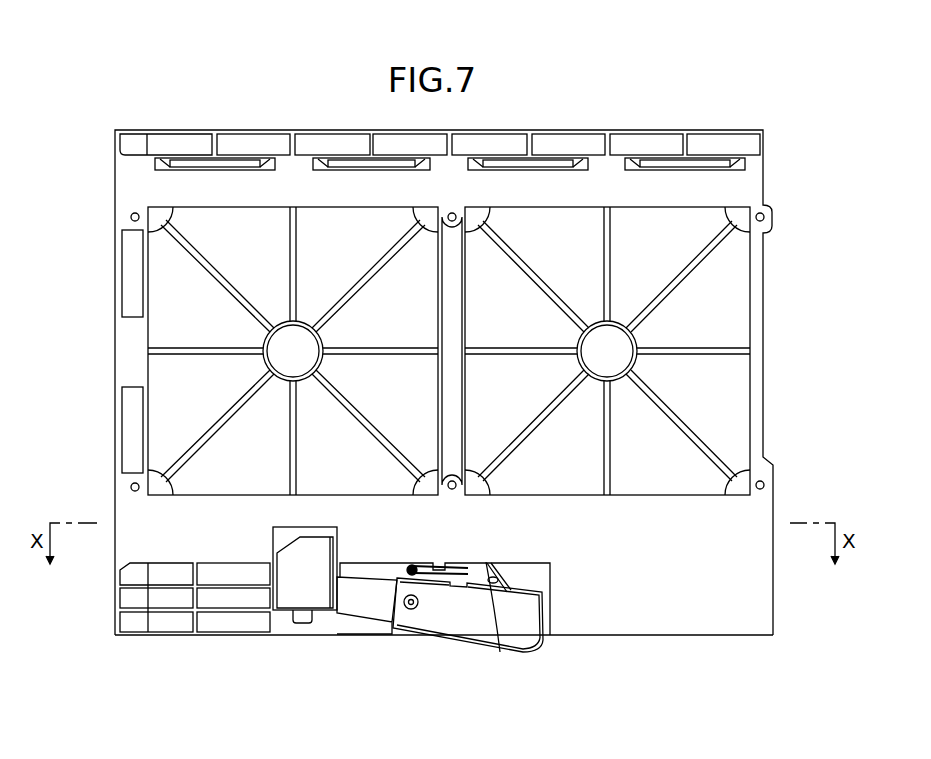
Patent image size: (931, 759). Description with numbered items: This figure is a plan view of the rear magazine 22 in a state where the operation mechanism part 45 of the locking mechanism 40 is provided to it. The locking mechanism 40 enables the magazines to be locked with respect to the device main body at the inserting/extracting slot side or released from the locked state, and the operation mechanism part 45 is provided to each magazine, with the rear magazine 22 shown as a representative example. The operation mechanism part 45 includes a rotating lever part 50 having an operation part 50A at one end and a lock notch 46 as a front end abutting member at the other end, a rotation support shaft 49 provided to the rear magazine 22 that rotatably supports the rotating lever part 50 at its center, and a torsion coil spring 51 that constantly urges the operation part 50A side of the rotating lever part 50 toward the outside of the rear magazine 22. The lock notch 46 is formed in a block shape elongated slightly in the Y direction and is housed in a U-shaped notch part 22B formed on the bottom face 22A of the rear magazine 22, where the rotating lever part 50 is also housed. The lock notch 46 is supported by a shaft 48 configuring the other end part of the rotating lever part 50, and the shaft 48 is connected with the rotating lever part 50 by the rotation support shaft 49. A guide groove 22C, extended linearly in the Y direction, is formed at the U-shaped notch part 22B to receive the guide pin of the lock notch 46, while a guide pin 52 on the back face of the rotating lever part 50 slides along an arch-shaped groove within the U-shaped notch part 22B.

The rear magazine 22 is at (716, 129).
The bottom face 22A is at (745, 608).
The U-shaped notch part 22B is at (551, 603).
The guide groove 22C is at (304, 618).
The locking mechanism 40 is at (553, 647).
The operation mechanism part 45 is at (558, 712).
The lock notch 46 is at (292, 597).
The shaft 48 is at (367, 607).
The rotation support shaft 49 is at (410, 610).
The rotating lever part 50 is at (532, 650).
The operation part 50A is at (453, 627).
The torsion coil spring 51 is at (408, 568).
The guide pin 52 is at (500, 652).